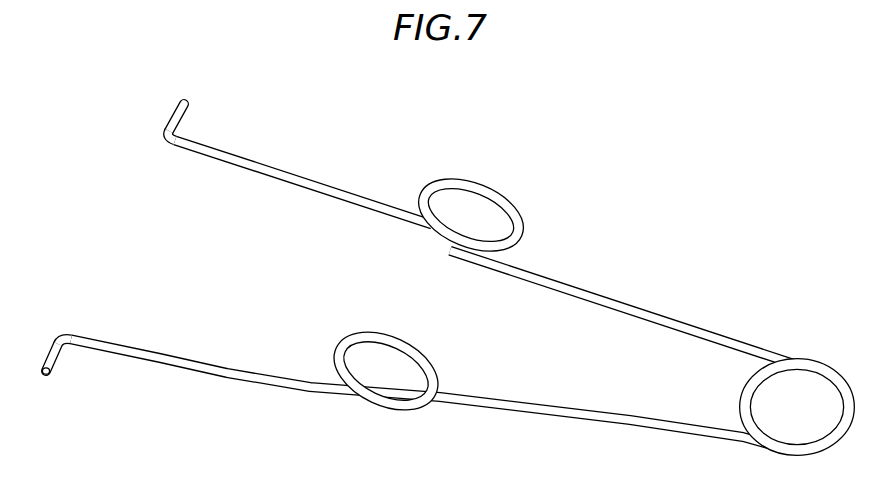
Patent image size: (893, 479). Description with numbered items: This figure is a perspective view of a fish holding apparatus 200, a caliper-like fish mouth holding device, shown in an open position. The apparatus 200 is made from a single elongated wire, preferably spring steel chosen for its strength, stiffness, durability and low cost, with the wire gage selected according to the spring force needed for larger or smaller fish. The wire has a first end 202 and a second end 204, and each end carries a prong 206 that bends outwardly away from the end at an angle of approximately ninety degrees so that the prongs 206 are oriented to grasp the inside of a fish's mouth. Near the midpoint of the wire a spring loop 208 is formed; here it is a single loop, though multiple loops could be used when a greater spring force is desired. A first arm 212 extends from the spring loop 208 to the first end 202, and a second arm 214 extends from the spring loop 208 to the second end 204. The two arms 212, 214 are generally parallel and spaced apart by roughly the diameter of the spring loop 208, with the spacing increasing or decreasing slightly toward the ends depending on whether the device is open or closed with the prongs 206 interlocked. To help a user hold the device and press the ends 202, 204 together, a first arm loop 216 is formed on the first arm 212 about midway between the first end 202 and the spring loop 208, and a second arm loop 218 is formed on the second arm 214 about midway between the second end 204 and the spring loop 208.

The fish holding apparatus 200 is at (662, 127).
The first end 202 is at (47, 378).
The second end 204 is at (190, 102).
The prong 206 is at (158, 121).
The spring loop 208 is at (747, 389).
The first arm 212 is at (258, 380).
The second arm 214 is at (287, 180).
The first arm loop 216 is at (378, 400).
The second arm loop 218 is at (478, 190).